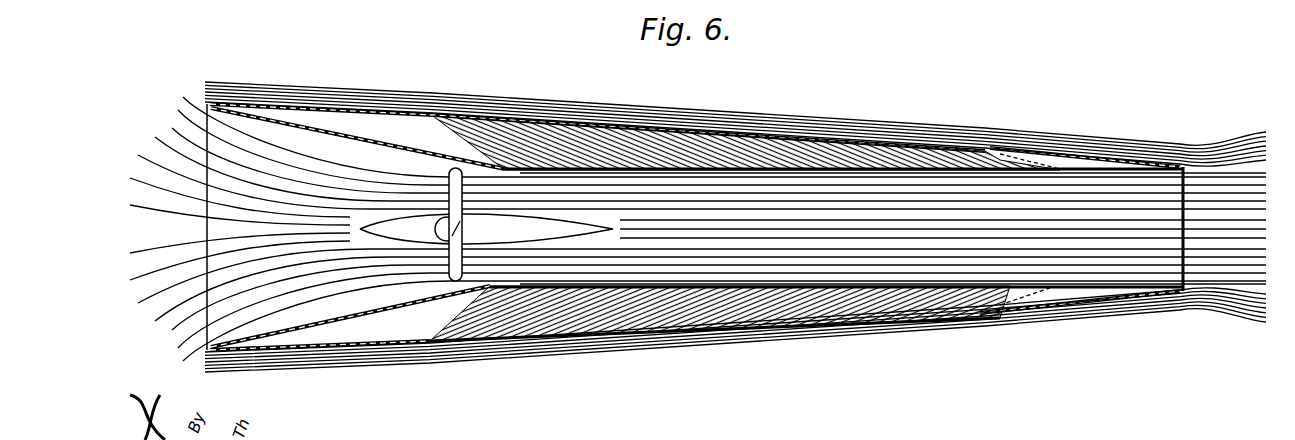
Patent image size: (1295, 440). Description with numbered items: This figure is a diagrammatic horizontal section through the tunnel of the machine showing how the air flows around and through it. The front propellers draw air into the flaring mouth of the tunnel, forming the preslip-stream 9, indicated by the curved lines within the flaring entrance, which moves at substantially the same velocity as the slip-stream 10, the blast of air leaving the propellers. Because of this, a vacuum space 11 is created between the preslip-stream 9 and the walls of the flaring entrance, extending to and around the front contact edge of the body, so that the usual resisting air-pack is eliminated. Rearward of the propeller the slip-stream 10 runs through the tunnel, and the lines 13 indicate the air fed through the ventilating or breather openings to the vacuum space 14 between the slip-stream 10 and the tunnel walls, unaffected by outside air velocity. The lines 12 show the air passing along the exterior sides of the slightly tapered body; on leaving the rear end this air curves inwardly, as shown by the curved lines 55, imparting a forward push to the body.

The preslip-stream 9 is at (275, 300).
The slip-stream 10 is at (765, 202).
The vacuum space 11 is at (696, 227).
The air exterior of the body 12 is at (447, 357).
The air fed to the vacuum space 13 is at (605, 318).
The vacuum space between slip-stream and tunnel walls 14 is at (1060, 180).
The curved lines of inwardly curving air 55 is at (1240, 322).